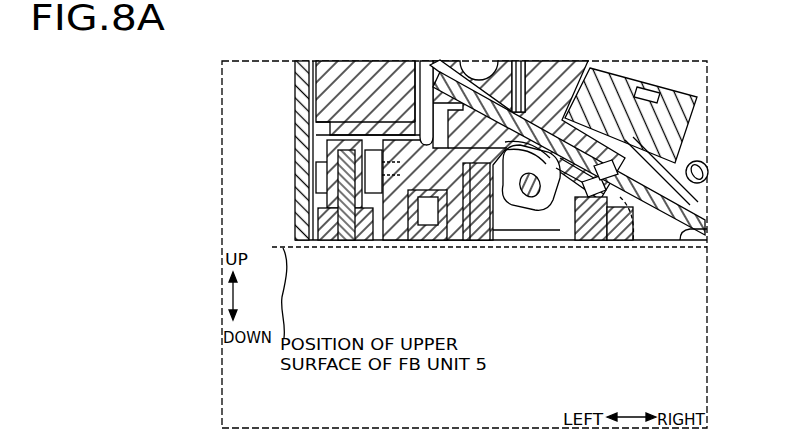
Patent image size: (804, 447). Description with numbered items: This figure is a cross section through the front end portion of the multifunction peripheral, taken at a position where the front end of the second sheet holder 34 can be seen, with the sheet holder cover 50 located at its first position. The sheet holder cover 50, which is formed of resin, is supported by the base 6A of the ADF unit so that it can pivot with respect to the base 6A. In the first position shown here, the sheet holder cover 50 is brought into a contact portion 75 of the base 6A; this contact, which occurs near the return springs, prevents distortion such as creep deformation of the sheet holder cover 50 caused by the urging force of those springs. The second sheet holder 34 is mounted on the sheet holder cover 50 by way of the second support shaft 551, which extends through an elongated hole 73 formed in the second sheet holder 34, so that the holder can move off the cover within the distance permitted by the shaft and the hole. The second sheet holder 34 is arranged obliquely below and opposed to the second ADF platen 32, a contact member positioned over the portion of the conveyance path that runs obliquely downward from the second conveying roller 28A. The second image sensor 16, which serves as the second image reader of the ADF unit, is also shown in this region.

The second conveying roller 28A is at (509, 73).
The base 6A is at (288, 172).
The second image sensor 16 is at (680, 131).
The second ADF platen 32 is at (678, 202).
The contact portion 75 is at (466, 240).
The sheet holder cover 50 is at (493, 241).
The second support shaft 551 is at (533, 198).
The elongated hole 73 is at (543, 200).
The second sheet holder 34 is at (630, 222).